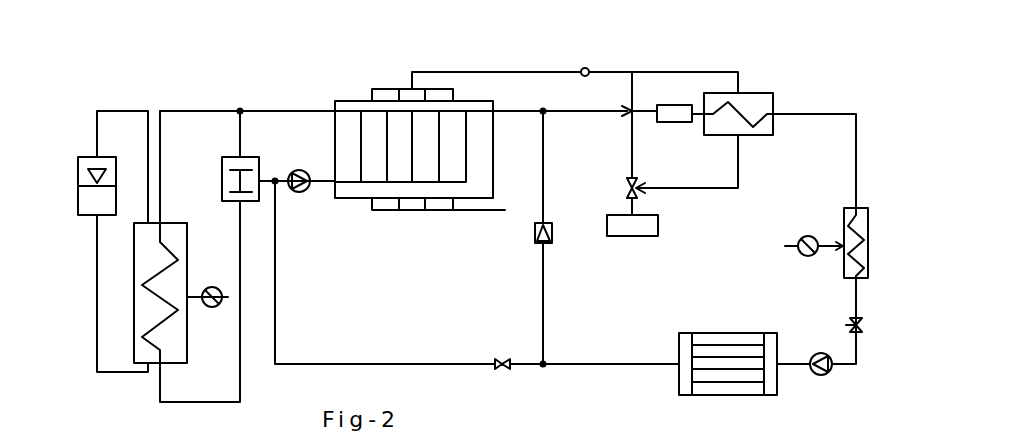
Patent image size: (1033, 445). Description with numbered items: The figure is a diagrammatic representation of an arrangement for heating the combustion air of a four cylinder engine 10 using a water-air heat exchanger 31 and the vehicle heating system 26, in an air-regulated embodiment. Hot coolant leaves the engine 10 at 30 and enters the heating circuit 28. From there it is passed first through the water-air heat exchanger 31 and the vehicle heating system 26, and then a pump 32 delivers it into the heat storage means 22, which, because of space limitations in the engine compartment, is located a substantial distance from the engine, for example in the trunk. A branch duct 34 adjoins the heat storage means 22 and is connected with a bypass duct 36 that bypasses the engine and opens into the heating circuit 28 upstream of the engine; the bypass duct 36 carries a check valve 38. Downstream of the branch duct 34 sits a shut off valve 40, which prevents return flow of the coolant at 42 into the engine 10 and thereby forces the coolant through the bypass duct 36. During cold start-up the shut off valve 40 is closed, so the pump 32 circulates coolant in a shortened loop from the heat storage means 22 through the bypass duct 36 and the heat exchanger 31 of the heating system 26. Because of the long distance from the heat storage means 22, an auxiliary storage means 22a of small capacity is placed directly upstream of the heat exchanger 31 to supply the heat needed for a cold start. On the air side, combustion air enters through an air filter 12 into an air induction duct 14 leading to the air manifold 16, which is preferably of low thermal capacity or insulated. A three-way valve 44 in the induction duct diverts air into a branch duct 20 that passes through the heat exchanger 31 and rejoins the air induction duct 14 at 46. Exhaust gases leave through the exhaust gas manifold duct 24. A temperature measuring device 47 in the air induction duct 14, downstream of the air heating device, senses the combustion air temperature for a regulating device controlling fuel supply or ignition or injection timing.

The engine 10 is at (352, 193).
The air filter 12 is at (628, 237).
The air induction duct 14 is at (465, 72).
The air manifold 16 is at (392, 89).
The branch duct 20 is at (684, 190).
The heat storage means 22 is at (715, 333).
The auxiliary storage means 22a is at (672, 122).
The exhaust gas manifold duct 24 is at (410, 212).
The vehicle heating system 26 is at (845, 207).
The heating circuit 28 is at (818, 114).
The engine coolant outlet 30 is at (497, 111).
The water-air heat exchanger 31 is at (757, 93).
The pump 32 is at (815, 353).
The branch duct 34 is at (548, 364).
The bypass duct 36 is at (545, 285).
The check valve 38 is at (531, 232).
The shut off valve 40 is at (501, 360).
The coolant return inlet 42 is at (327, 180).
The three-way valve 44 is at (627, 190).
The rejoining point 46 is at (634, 72).
The temperature measuring device 47 is at (583, 69).